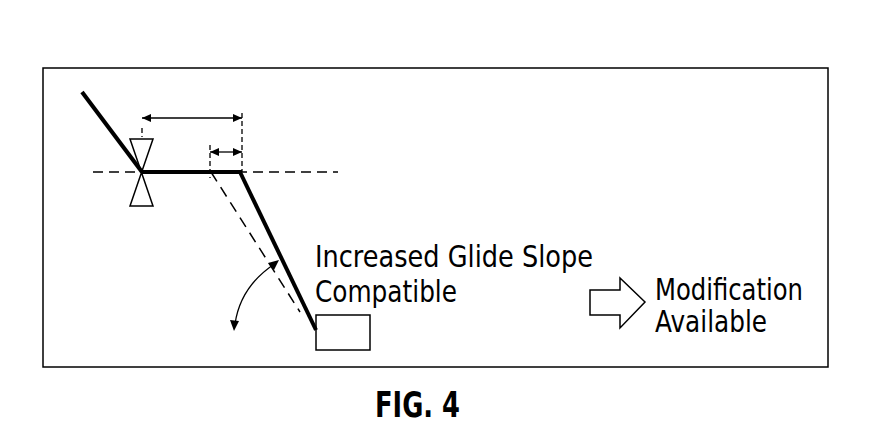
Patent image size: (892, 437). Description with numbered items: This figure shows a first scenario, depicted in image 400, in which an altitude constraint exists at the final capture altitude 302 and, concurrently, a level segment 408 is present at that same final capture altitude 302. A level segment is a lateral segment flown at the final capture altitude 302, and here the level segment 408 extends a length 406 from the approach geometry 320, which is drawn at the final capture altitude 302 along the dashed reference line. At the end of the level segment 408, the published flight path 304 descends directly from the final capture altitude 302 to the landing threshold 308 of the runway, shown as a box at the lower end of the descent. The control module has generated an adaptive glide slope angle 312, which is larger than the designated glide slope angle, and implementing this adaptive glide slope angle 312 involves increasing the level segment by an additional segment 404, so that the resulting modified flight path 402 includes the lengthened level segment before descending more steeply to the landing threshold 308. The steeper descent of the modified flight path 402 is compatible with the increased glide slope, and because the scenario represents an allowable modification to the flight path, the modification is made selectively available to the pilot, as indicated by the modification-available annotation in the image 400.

The image 400 is at (465, 110).
The final capture altitude 302 is at (324, 176).
The published flight path 304 is at (261, 248).
The landing threshold 308 is at (358, 328).
The adaptive glide slope angle 312 is at (237, 300).
The approach geometry 320 is at (140, 138).
The modified flight path 402 is at (275, 246).
The segment 404 is at (223, 148).
The length of the level segment 406 is at (193, 116).
The level segment 408 is at (182, 175).